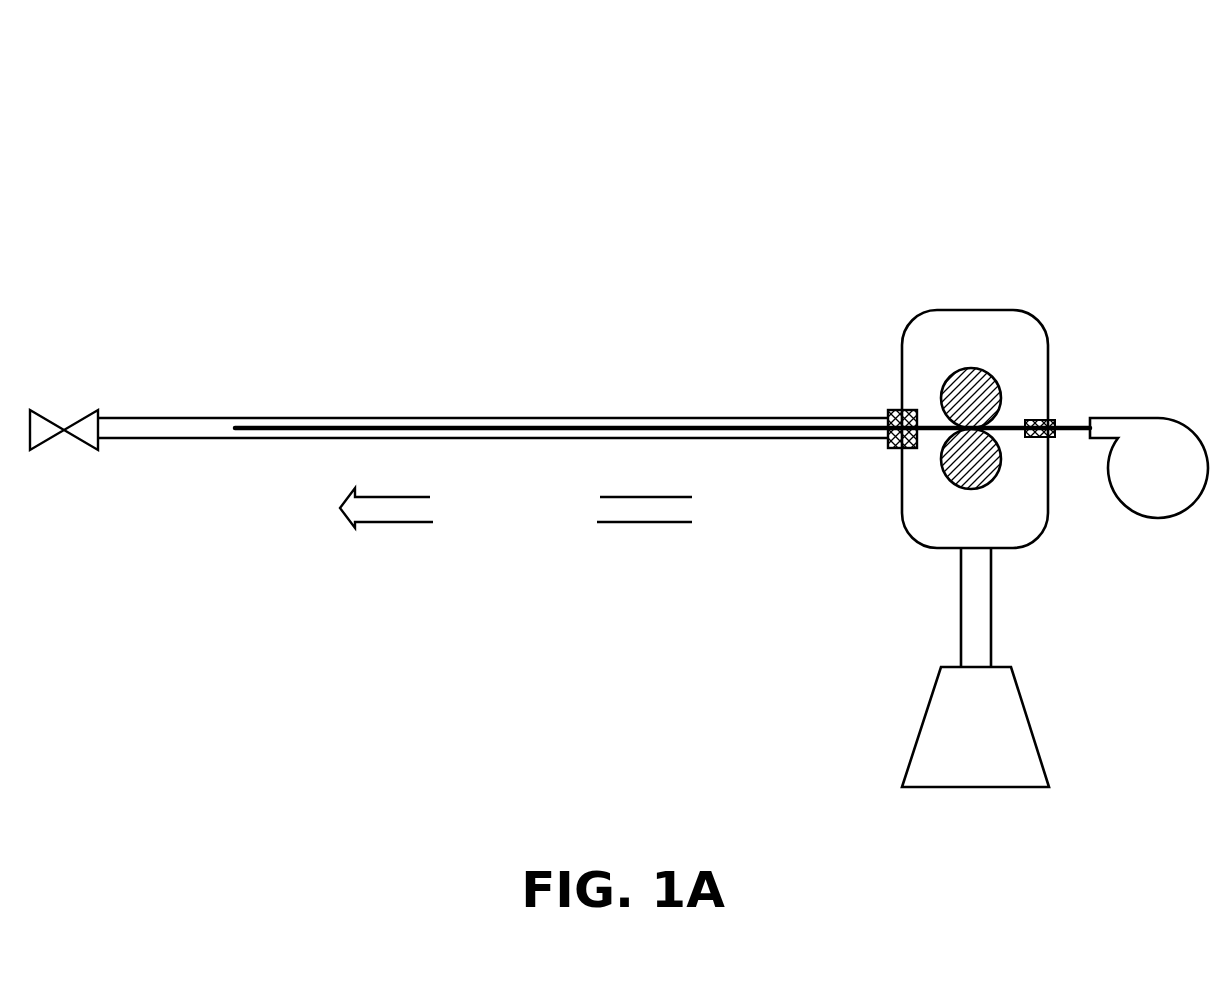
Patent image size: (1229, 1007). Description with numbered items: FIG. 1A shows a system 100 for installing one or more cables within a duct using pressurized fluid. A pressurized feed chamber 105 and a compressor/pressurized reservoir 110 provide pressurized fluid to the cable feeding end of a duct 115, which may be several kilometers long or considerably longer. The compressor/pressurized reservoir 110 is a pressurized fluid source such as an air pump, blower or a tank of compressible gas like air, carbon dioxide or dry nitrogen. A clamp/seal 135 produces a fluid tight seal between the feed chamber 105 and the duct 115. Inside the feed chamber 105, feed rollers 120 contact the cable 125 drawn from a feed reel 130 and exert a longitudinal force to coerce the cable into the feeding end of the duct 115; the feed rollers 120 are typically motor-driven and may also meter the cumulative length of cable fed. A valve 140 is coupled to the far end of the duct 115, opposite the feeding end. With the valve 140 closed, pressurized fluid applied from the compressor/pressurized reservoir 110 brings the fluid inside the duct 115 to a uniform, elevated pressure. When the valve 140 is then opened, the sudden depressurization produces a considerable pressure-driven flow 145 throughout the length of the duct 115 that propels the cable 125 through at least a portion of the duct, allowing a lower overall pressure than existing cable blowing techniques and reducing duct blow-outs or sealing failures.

The system 100 is at (612, 40).
The pressurized feed chamber 105 is at (975, 310).
The compressor/pressurized reservoir 110 is at (920, 728).
The duct 115 is at (182, 418).
The feed rollers 120 is at (880, 550).
The cable 125 is at (533, 418).
The feed reel 130 is at (1158, 520).
The clamp/seal 135 is at (885, 405).
The valve 140 is at (68, 450).
The pressure-driven flow 145 is at (516, 507).